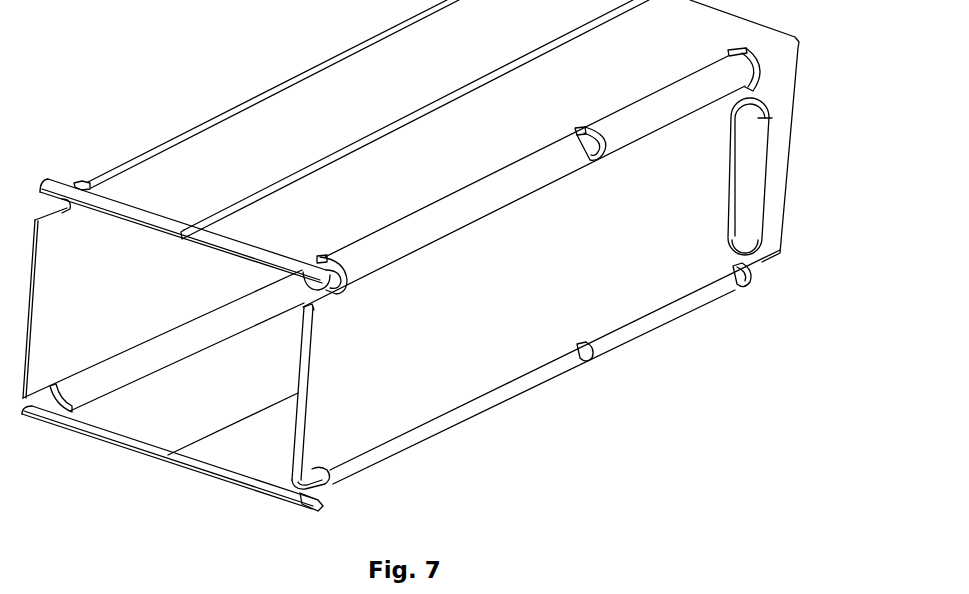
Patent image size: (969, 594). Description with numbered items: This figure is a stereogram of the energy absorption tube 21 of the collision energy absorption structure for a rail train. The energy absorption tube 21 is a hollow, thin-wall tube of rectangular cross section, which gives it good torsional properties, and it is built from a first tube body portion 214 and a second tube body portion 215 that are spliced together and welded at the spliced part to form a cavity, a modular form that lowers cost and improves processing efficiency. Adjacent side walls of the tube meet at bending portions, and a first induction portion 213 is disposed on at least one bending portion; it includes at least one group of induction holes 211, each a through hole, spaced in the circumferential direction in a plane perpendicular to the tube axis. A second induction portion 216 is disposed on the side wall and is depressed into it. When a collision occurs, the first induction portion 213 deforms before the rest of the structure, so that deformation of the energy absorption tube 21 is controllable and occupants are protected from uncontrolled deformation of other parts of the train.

The energy absorption tube 21 is at (240, 93).
The induction hole 211 is at (750, 68).
The first induction portion 213 is at (593, 150).
The first tube body portion 214 is at (128, 430).
The second tube body portion 215 is at (258, 462).
The second induction portion 216 is at (742, 197).